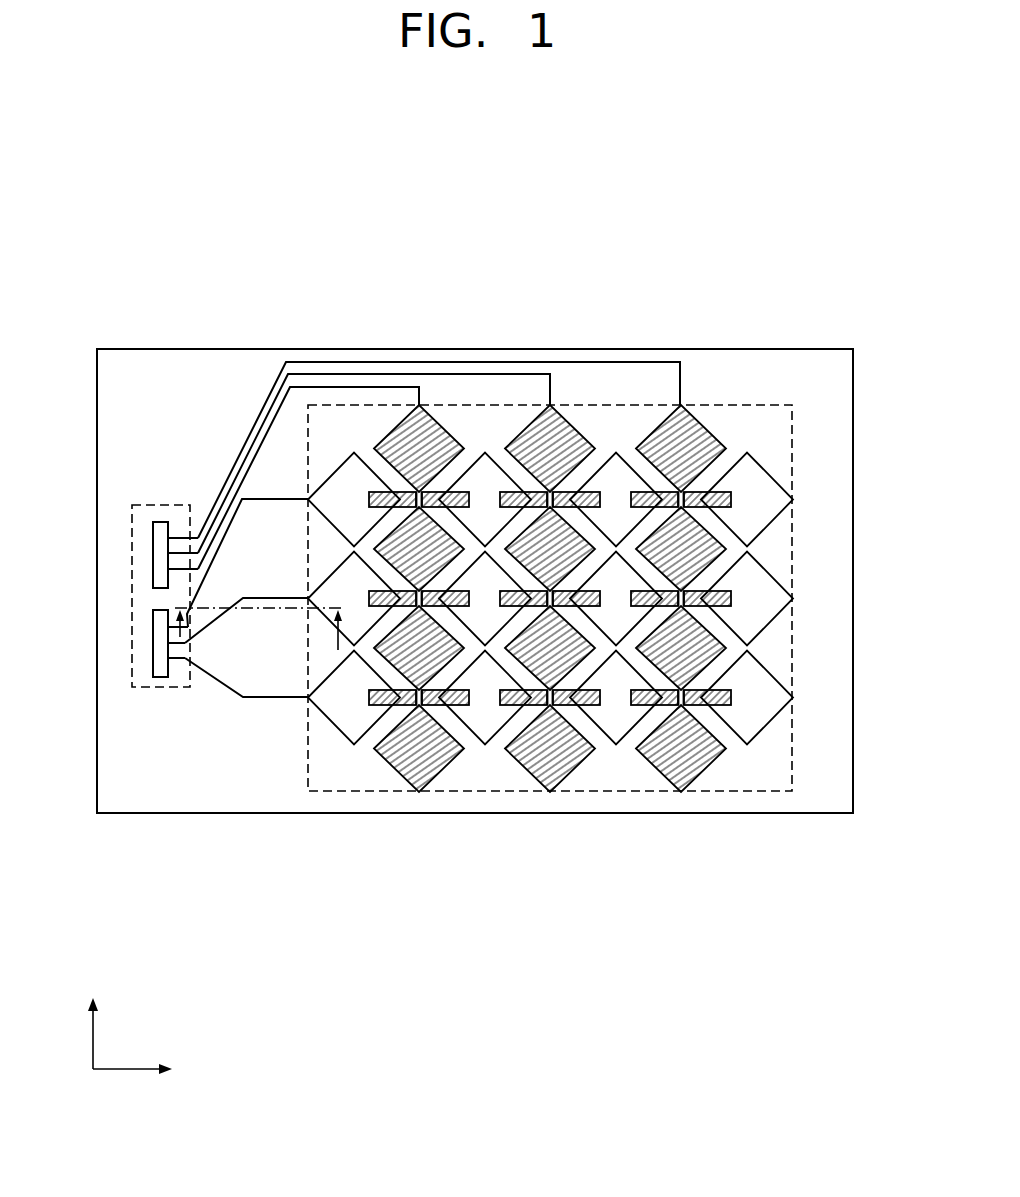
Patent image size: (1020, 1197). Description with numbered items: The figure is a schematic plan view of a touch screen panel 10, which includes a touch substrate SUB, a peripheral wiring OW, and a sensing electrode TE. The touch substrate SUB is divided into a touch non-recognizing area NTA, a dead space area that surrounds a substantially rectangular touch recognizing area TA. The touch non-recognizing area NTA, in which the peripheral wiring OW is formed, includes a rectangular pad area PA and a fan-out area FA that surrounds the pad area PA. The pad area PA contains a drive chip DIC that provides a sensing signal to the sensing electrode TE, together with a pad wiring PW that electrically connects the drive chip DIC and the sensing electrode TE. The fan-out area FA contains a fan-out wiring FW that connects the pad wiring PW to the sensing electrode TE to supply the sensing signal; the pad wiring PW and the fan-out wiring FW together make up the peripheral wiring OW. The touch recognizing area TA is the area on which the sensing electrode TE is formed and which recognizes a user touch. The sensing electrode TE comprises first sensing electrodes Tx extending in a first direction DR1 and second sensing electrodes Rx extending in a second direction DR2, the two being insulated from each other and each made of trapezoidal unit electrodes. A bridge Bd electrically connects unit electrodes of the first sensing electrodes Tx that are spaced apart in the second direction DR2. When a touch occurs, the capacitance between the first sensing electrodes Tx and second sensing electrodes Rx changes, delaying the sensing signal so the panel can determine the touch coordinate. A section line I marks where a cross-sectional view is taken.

The touch screen panel 10 is at (710, 290).
The touch substrate SUB is at (835, 510).
The touch non-recognizing area NTA is at (240, 283).
The pad area PA is at (151, 512).
The fan-out area FA is at (209, 403).
The drive chip DIC is at (152, 556).
The peripheral wiring OW is at (237, 880).
The pad wiring PW is at (185, 660).
The fan-out wiring FW is at (231, 690).
The touch recognizing area TA is at (749, 424).
The sensing electrode TE is at (400, 283).
The first sensing electrode Tx is at (330, 476).
The second sensing electrode Rx is at (396, 428).
The bridge Bd is at (727, 598).
The line I-I' I is at (260, 623).
The first direction DR1 is at (97, 1021).
The second direction DR2 is at (156, 1071).